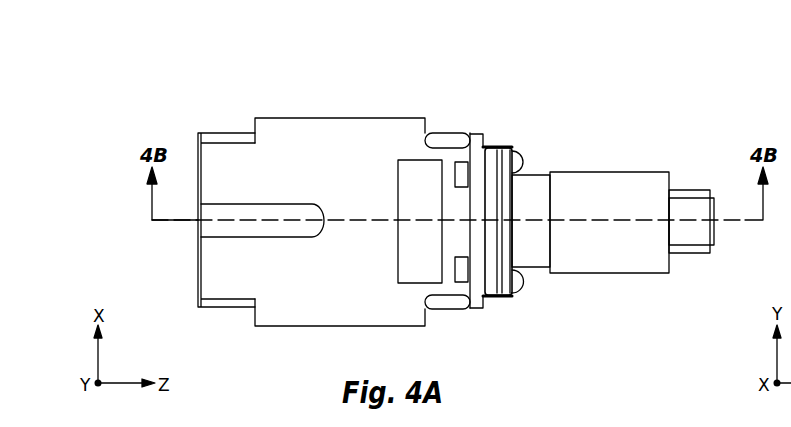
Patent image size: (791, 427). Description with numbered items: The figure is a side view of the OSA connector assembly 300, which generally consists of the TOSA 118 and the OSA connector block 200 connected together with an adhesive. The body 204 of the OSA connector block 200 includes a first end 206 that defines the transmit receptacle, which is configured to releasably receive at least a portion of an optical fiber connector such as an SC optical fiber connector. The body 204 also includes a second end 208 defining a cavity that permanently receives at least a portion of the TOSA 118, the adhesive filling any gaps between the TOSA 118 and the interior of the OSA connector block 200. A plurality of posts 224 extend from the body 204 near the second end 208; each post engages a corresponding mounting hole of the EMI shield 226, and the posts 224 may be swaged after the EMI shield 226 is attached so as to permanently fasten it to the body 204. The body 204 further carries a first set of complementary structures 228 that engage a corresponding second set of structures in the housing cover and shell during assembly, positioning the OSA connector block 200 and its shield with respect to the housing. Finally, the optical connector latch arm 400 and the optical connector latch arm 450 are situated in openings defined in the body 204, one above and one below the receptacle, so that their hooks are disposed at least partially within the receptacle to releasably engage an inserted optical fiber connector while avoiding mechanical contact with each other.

The TOSA 118 is at (603, 160).
The OSA connector block 200 is at (322, 112).
The body 204 is at (350, 181).
The first end 206 is at (198, 307).
The second end 208 is at (483, 146).
The posts 224 is at (520, 168).
The EMI shield 226 is at (503, 297).
The first set of complementary structures 228 is at (462, 165).
The OSA connector assembly 300 is at (468, 72).
The optical connector latch arm 400 is at (437, 132).
The optical connector latch arm 450 is at (442, 310).